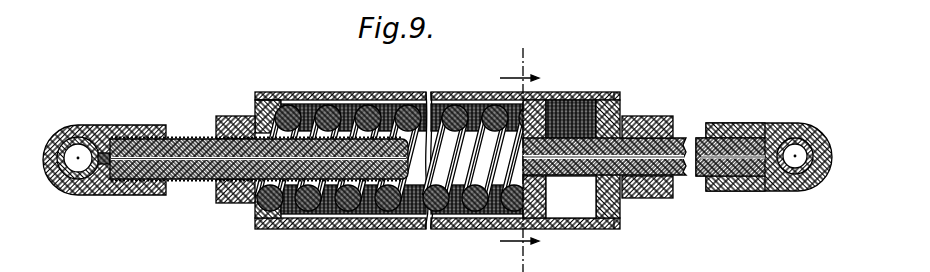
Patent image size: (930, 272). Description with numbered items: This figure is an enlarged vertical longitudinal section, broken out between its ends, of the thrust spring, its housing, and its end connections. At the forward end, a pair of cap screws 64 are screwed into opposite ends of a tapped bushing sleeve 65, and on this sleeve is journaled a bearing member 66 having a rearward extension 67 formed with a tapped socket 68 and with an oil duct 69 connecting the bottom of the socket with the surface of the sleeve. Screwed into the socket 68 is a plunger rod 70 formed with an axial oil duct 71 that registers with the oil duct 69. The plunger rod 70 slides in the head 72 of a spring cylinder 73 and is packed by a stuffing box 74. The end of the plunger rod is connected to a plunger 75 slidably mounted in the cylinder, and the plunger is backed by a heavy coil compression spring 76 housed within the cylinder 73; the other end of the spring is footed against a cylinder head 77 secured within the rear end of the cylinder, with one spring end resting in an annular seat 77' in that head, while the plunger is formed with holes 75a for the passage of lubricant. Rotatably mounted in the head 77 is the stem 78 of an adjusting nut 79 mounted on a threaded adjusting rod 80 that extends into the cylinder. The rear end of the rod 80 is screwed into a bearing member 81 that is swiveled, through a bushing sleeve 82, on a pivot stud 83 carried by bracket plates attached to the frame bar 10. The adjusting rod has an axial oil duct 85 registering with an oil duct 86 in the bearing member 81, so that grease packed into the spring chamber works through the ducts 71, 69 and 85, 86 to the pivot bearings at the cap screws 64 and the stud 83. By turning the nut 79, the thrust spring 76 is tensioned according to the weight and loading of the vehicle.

The frame bar 10 is at (488, 36).
The cap screws 64 is at (783, 129).
The bushing sleeve 65 is at (798, 130).
The bearing member 66 is at (788, 183).
The rearward extension 67 is at (743, 117).
The tapped socket 68 is at (710, 128).
The oil duct 69 is at (756, 158).
The plunger rod 70 is at (645, 108).
The axial oil duct 71 is at (700, 165).
The head 72 is at (615, 92).
The spring cylinder 73 is at (430, 221).
The stuffing box 74 is at (641, 190).
The plunger 75 is at (545, 108).
The holes 75a is at (613, 95).
The coil compression spring 76 is at (397, 97).
The cylinder head 77 is at (255, 109).
The annular seat 77' is at (280, 82).
The stem 78 is at (249, 203).
The adjusting nut 79 is at (211, 112).
The threaded adjusting rod 80 is at (181, 160).
The bearing member 81 is at (114, 117).
The bushing sleeve 82 is at (77, 129).
The pivot stud 83 is at (68, 164).
The axial oil duct 85 is at (330, 152).
The oil duct 86 is at (96, 157).